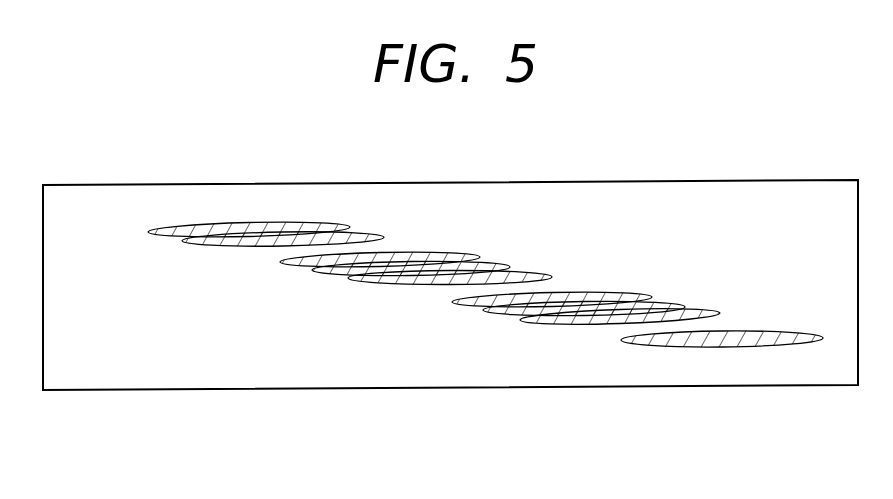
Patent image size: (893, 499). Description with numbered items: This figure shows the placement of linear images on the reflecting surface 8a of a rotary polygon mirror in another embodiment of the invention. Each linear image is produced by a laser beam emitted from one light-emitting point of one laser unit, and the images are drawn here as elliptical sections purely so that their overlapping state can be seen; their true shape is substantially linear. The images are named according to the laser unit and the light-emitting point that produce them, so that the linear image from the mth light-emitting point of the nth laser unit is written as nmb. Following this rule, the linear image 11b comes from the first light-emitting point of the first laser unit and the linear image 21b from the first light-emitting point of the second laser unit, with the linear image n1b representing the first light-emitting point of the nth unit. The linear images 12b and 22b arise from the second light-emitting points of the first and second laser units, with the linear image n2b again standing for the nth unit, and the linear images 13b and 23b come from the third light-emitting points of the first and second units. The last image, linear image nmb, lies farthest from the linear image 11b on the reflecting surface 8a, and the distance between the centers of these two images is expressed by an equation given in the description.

The reflecting surface 8a is at (137, 375).
The linear image 11b is at (180, 222).
The linear image 21b is at (365, 231).
The linear image n1b is at (442, 253).
The linear image 12b is at (500, 262).
The linear image 22b is at (543, 270).
The linear image n2b is at (617, 293).
The linear image 13b is at (667, 303).
The linear image 23b is at (712, 308).
The linear image nmb is at (800, 333).